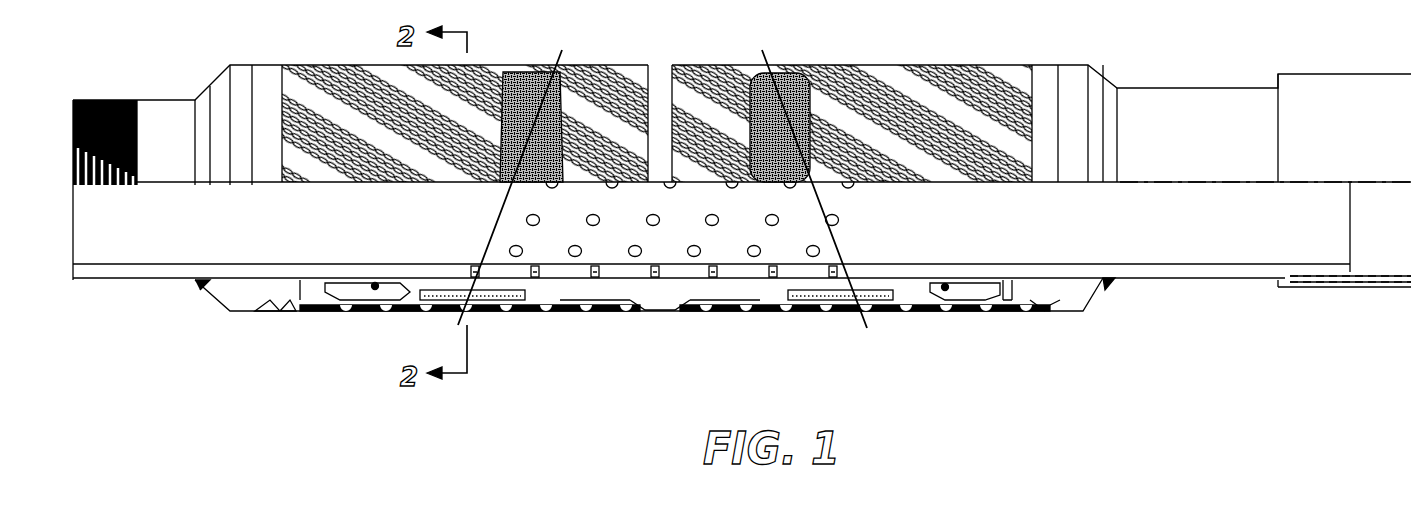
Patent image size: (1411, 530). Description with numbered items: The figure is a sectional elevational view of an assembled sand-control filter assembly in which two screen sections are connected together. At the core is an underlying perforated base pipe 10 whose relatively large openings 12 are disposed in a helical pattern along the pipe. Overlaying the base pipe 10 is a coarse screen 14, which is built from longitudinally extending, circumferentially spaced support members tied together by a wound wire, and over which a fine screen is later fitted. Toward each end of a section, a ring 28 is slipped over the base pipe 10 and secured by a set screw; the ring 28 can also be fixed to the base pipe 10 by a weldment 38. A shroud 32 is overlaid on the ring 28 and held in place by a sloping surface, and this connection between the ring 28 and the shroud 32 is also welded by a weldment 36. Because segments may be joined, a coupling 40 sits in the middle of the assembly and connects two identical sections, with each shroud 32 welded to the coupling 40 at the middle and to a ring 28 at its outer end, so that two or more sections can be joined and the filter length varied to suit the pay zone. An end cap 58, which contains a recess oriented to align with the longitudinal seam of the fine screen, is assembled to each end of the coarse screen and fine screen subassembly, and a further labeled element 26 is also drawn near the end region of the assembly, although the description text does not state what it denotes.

The perforated base pipe 10 is at (158, 100).
The openings 12 is at (457, 318).
The coarse screen 14 is at (485, 312).
The pin 26 is at (1005, 290).
The ring 28 is at (232, 298).
The shroud 32 is at (588, 311).
The weldment 36 is at (1047, 307).
The weldment 38 is at (1107, 282).
The coupling 40 is at (658, 311).
The end cap 58 is at (942, 312).